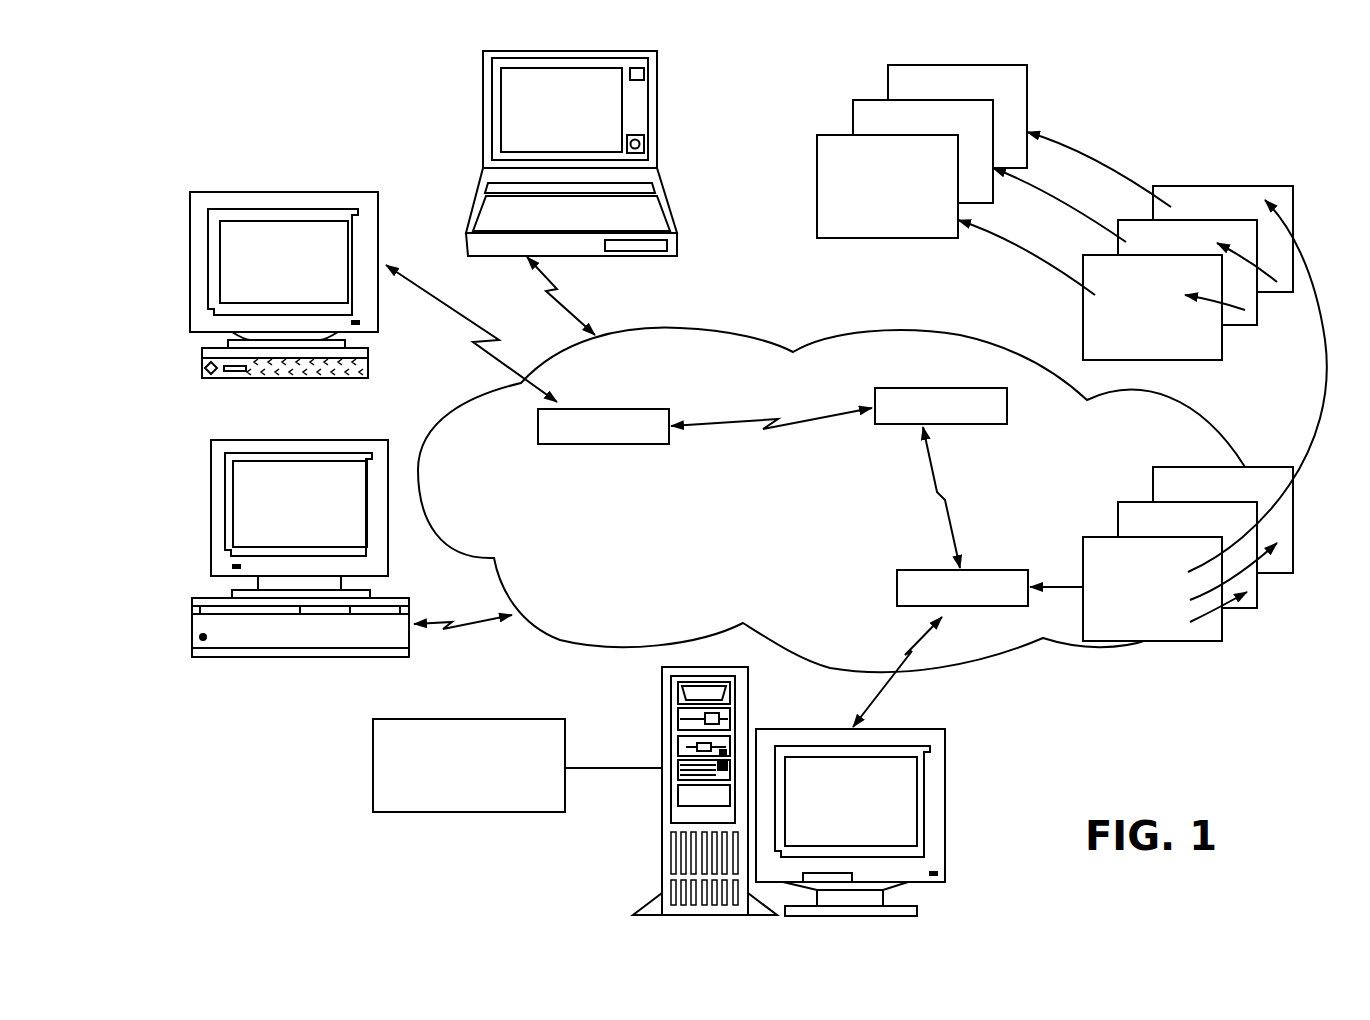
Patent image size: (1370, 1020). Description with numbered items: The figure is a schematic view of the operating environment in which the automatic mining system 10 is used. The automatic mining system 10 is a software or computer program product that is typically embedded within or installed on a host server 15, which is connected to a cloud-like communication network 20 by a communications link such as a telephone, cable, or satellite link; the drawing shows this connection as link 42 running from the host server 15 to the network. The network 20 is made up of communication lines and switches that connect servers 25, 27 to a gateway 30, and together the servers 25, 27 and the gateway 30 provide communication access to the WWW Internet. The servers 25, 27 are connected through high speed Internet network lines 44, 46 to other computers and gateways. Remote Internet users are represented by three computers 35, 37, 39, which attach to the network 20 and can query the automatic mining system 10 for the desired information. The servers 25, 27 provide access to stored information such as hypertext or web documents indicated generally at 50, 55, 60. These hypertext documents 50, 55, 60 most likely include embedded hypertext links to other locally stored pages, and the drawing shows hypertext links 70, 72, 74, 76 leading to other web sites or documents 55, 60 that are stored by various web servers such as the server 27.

The automatic mining system 10 is at (373, 758).
The host server 15 is at (662, 712).
The communication network 20 is at (726, 330).
The server 25 is at (938, 572).
The server 27 is at (952, 388).
The gateway 30 is at (600, 444).
The computer 35 is at (670, 206).
The computer 37 is at (347, 192).
The computer 39 is at (348, 440).
The communication link 42 is at (862, 708).
The high speed Internet network line 44 is at (948, 530).
The high speed Internet network line 46 is at (760, 417).
The hypertext documents 50 is at (1305, 540).
The hypertext documents 55 is at (1303, 212).
The hypertext documents 60 is at (832, 120).
The hypertext link 70 is at (1325, 378).
The hypertext link 72 is at (1107, 168).
The hypertext link 74 is at (1068, 208).
The hypertext link 76 is at (1018, 250).